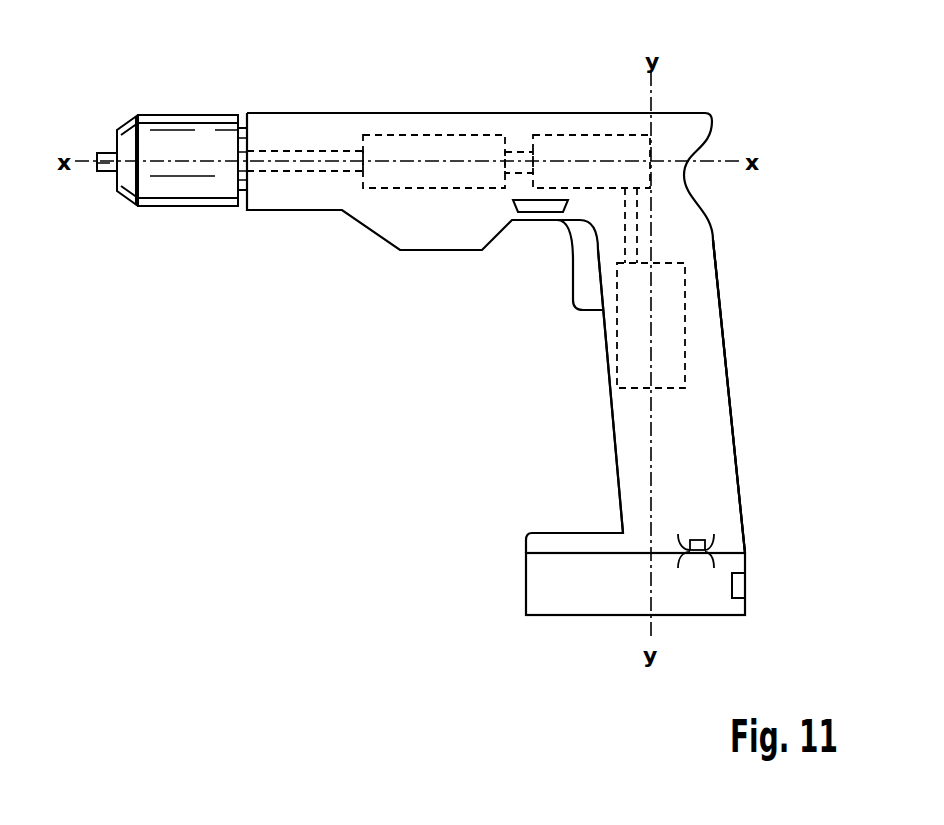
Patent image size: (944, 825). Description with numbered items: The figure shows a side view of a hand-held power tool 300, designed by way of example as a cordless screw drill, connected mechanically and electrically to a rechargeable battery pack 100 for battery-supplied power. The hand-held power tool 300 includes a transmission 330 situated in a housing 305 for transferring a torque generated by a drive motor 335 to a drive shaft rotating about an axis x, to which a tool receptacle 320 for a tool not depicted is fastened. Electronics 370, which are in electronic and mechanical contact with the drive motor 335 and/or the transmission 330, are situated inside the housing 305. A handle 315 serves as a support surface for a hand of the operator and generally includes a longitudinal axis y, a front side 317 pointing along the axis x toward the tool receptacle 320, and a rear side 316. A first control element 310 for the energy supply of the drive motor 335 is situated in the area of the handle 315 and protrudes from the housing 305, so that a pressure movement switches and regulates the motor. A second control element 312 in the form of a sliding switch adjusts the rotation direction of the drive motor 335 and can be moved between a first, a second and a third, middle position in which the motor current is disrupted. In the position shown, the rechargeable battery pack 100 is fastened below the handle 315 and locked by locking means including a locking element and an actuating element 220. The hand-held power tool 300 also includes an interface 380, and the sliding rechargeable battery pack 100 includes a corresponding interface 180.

The hand-held power tool 300 is at (698, 86).
The tool receptacle 320 is at (103, 150).
The transmission 330 is at (375, 143).
The housing 305 is at (423, 133).
The drive motor 335 is at (582, 150).
The electronics 370 is at (673, 355).
The second control element 312 is at (542, 206).
The first control element 310 is at (585, 300).
The handle 315 is at (700, 302).
The rear side 316 is at (733, 373).
The front side 317 is at (610, 392).
The interface 380 is at (697, 541).
The interface 180 is at (710, 545).
The rechargeable battery pack 100 is at (578, 598).
The actuating element 220 is at (735, 597).